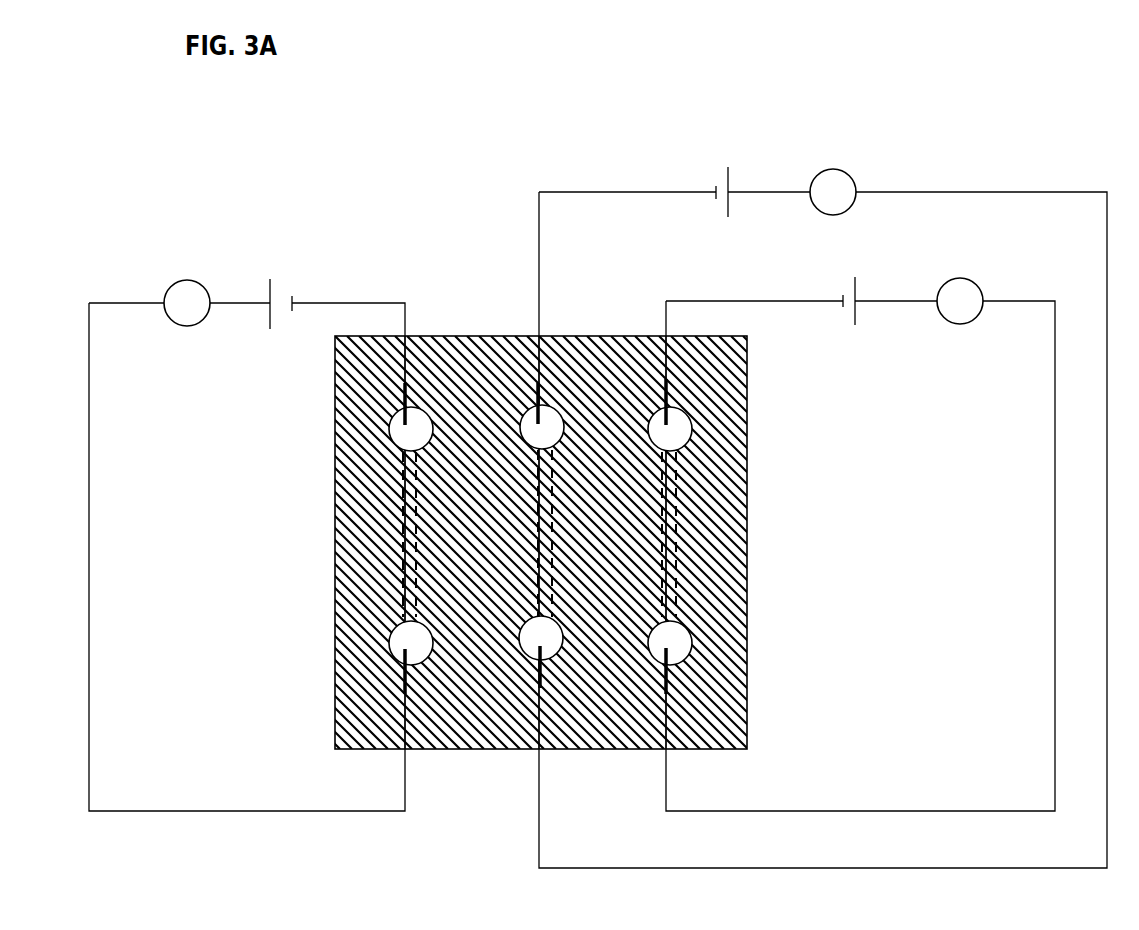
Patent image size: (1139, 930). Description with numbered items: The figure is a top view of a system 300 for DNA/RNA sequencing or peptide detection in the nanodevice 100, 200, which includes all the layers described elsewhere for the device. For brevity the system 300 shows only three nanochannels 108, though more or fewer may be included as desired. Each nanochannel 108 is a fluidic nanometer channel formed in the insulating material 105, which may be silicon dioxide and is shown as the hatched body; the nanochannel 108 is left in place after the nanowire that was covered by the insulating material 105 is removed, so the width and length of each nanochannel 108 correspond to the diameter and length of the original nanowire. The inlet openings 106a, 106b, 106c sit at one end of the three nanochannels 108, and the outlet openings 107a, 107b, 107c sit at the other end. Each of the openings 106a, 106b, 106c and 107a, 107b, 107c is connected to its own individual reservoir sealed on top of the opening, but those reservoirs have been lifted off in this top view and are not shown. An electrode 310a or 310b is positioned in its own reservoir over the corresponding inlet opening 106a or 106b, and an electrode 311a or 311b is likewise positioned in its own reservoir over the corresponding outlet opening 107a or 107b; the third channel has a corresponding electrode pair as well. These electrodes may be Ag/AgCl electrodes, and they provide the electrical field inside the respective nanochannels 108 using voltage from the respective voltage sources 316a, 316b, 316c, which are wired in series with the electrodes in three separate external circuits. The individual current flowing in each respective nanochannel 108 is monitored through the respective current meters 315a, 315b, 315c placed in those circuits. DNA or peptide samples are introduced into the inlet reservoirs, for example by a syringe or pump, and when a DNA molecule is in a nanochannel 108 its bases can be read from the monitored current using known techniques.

The system 300 is at (406, 140).
The nanodevice 100 is at (433, 760).
The nanodevice 200 is at (569, 552).
The insulating material 105 is at (358, 740).
The inlet opening 106a is at (386, 435).
The inlet opening 106b is at (550, 430).
The inlet opening 106c is at (687, 428).
The outlet opening 107a is at (395, 645).
The outlet opening 107b is at (524, 652).
The outlet opening 107c is at (687, 643).
The nanochannel 108 is at (526, 493).
The electrode 310a is at (403, 402).
The electrode 310b is at (537, 393).
The electrode 311a is at (403, 677).
The electrode 311b is at (543, 672).
The current meter 315a is at (166, 275).
The current meter 315b is at (727, 166).
The current meter 315c is at (883, 258).
The voltage source 316a is at (276, 278).
The voltage source 316b is at (855, 166).
The voltage source 316c is at (994, 285).